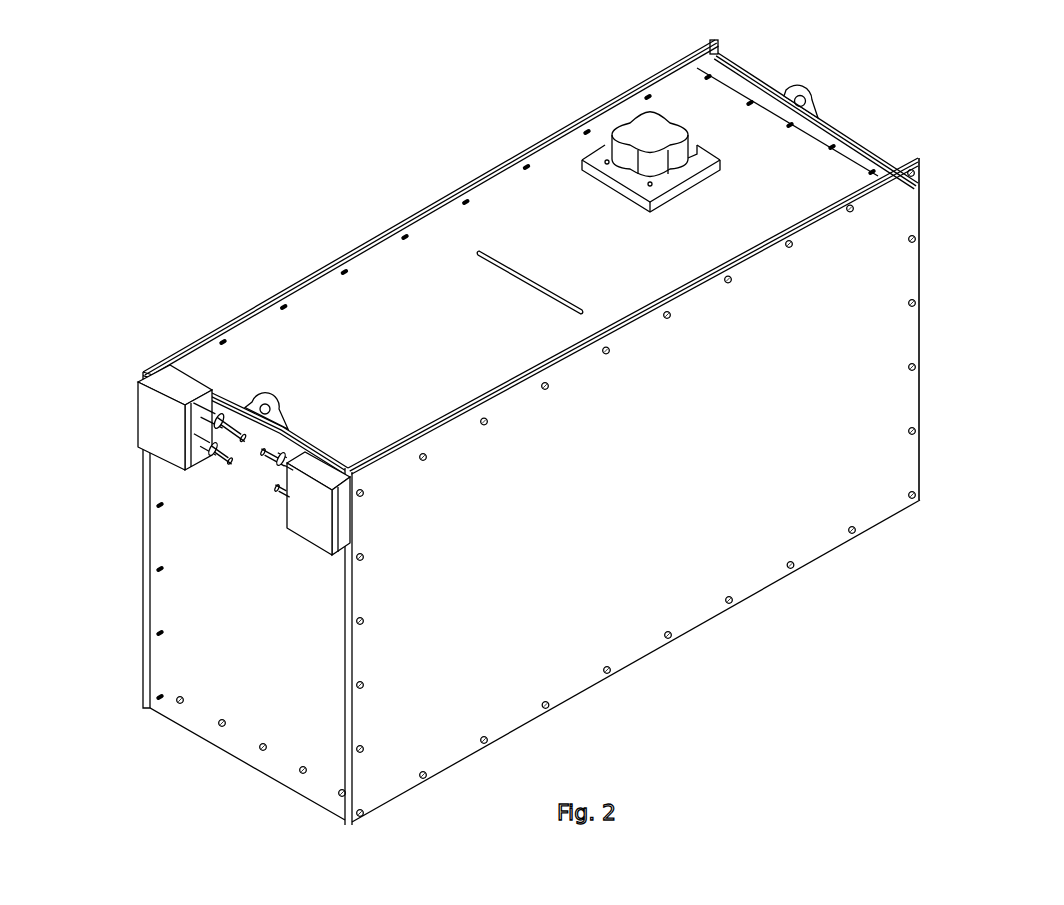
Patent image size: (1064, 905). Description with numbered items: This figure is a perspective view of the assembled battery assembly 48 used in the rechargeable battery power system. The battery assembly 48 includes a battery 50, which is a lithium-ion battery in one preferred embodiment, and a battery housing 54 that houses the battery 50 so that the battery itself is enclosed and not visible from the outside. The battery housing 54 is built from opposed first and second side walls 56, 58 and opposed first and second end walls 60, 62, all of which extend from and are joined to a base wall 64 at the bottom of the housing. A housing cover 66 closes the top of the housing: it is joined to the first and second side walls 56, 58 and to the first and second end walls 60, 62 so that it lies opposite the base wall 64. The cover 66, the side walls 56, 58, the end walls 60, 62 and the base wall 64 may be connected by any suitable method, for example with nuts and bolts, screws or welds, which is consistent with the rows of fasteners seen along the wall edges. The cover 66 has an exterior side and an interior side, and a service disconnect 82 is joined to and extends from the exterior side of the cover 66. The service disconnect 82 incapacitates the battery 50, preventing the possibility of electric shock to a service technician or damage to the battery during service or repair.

The battery assembly 48 is at (593, 428).
The battery 50 is at (550, 257).
The battery housing 54 is at (632, 491).
The first side wall 56 is at (737, 440).
The second side wall 58 is at (431, 209).
The first end wall 60 is at (827, 121).
The second end wall 62 is at (259, 599).
The base wall 64 is at (636, 661).
The housing cover 66 is at (438, 328).
The service disconnect 82 is at (602, 122).